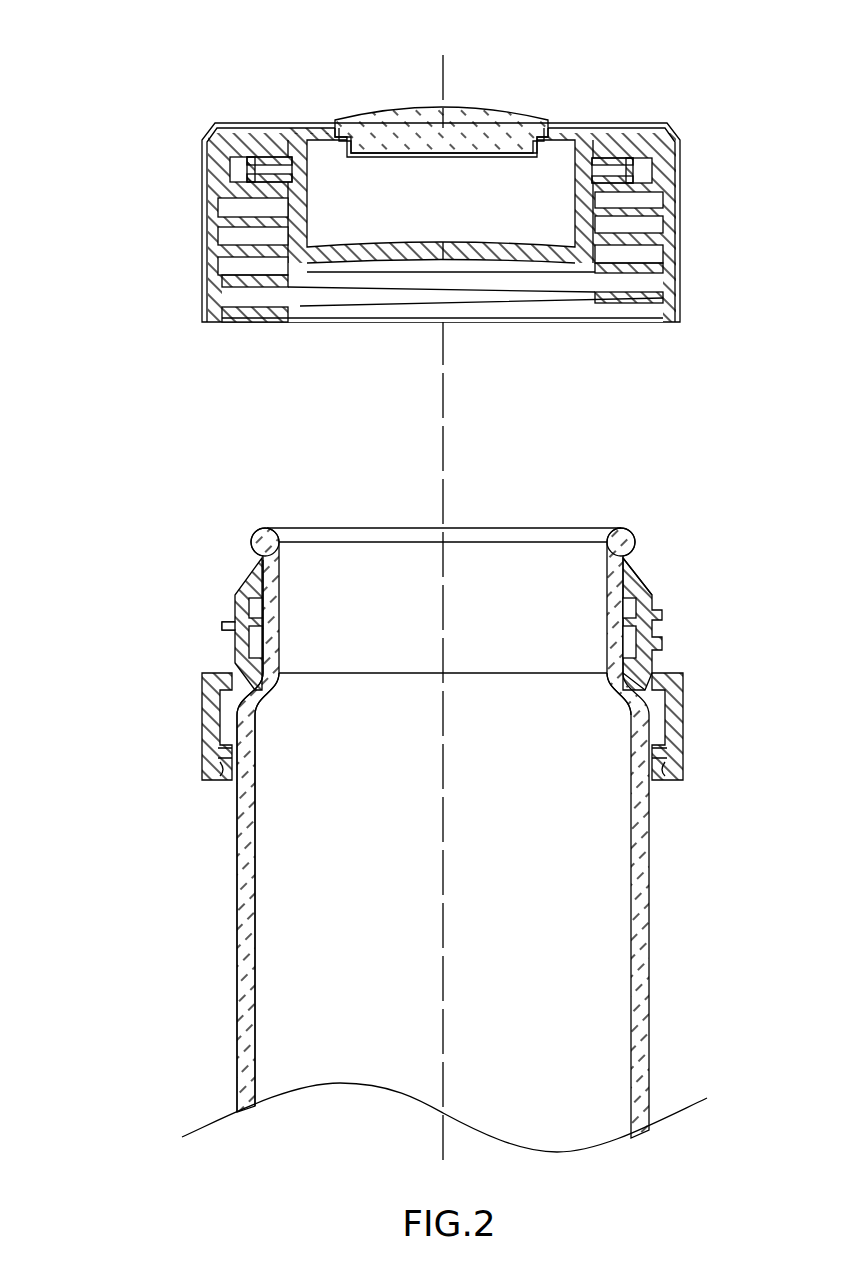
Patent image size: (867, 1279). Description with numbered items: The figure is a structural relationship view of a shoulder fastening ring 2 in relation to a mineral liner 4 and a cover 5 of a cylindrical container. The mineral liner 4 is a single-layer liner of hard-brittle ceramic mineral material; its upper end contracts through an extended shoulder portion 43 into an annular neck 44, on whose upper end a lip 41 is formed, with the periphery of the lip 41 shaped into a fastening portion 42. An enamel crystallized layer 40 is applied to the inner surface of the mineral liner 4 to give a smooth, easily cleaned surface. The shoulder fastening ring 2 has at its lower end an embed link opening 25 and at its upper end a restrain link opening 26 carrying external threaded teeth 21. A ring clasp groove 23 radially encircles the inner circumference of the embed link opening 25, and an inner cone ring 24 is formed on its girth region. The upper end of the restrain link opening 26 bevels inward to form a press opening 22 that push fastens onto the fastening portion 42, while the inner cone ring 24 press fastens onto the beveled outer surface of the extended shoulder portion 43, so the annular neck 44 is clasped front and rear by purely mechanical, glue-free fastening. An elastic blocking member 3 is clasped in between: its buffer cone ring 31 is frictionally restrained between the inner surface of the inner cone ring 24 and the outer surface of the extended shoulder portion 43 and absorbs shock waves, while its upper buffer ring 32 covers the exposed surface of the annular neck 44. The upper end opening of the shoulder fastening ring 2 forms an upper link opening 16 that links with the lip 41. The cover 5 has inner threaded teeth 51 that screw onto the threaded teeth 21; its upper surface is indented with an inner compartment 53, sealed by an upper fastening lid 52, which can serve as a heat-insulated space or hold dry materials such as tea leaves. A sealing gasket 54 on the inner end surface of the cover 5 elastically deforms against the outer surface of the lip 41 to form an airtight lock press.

The shoulder fastening ring 2 is at (172, 680).
The elastic blocking member 3 is at (251, 636).
The mineral liner 4 is at (255, 905).
The cover 5 is at (578, 100).
The upper link opening 16 is at (232, 564).
The threaded teeth 21 is at (655, 617).
The press opening 22 is at (637, 567).
The ring clasp groove 23 is at (680, 767).
The inner cone ring 24 is at (631, 679).
The embed link opening 25 is at (202, 750).
The restrain link opening 26 is at (232, 652).
The buffer cone ring 31 is at (258, 684).
The buffer ring 32 is at (268, 607).
The enamel crystallized layer 40 is at (264, 967).
The lip 41 is at (628, 530).
The fastening portion 42 is at (645, 547).
The extended shoulder portion 43 is at (257, 704).
The annular neck 44 is at (279, 633).
The inner threaded teeth 51 is at (622, 233).
The upper fastening lid 52 is at (402, 111).
The inner compartment 53 is at (388, 192).
The sealing gasket 54 is at (613, 162).